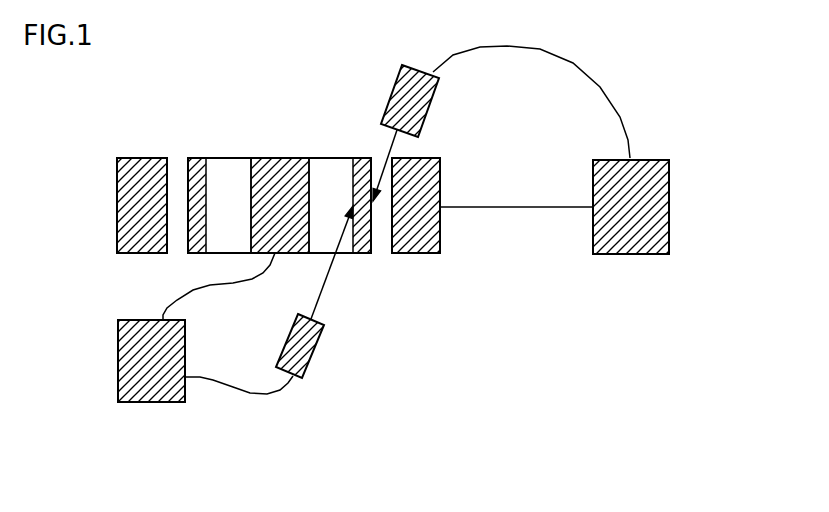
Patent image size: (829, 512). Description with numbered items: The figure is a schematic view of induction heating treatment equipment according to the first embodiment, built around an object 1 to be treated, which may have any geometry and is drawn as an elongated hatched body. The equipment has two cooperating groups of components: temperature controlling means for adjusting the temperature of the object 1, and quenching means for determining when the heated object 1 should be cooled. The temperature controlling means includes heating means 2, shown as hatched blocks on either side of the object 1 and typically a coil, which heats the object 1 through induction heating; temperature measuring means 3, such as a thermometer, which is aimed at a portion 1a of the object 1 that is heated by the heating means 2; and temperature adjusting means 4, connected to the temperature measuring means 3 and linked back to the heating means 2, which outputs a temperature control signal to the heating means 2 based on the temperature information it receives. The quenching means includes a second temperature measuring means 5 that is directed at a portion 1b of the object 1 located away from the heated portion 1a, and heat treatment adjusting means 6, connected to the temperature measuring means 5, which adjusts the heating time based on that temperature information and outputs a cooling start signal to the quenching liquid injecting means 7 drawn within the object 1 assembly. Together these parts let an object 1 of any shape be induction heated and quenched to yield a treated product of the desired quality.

The object to be treated 1 is at (296, 225).
The portion of object heated by heating means 1a is at (372, 205).
The portion of object located away from heated portion 1b is at (361, 253).
The heating means 2 is at (141, 166).
The temperature measuring means 3 is at (405, 96).
The temperature adjusting means 4 is at (660, 205).
The temperature measuring means 5 is at (305, 358).
The heat treatment adjusting means 6 is at (150, 390).
The quenching liquid injecting means 7 is at (280, 168).